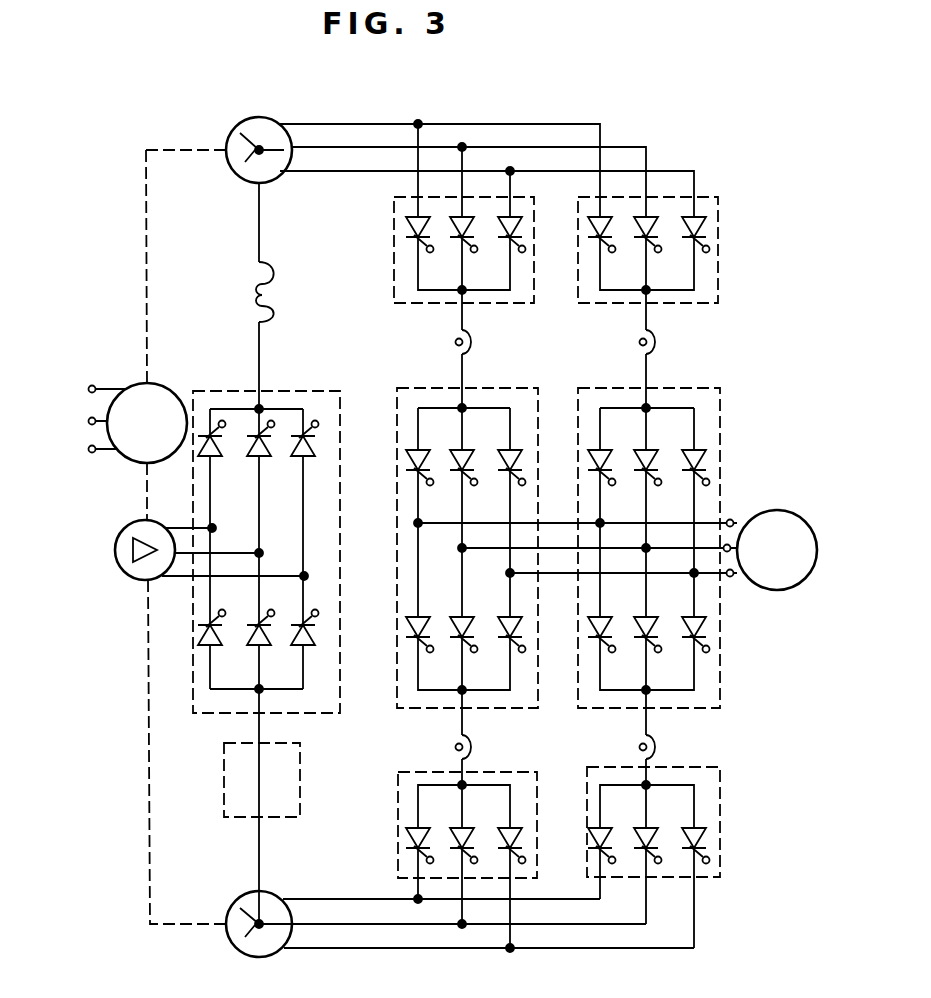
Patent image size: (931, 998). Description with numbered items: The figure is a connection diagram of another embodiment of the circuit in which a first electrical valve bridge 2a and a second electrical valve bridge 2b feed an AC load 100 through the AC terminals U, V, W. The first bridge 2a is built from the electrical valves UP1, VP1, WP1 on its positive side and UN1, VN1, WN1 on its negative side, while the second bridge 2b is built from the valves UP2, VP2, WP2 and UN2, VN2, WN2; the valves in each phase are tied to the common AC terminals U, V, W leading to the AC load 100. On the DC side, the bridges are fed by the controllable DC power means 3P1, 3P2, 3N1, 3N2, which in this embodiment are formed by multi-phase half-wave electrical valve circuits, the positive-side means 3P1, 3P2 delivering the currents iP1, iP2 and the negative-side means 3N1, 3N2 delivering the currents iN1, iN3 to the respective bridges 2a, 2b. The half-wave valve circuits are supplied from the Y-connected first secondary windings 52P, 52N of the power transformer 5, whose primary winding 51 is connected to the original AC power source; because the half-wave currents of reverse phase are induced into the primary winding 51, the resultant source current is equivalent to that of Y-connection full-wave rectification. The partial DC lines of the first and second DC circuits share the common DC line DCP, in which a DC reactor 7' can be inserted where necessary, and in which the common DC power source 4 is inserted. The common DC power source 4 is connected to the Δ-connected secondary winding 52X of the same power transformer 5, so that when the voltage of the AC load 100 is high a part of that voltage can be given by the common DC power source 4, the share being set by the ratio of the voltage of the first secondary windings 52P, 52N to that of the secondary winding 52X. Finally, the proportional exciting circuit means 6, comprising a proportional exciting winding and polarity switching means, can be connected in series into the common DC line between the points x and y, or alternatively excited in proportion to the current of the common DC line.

The first secondary winding 52P is at (258, 117).
The DC reactor 7' is at (278, 292).
The first secondary winding 52N is at (234, 912).
The primary winding 51 is at (129, 385).
The power transformer 5 is at (108, 504).
The secondary winding 52X is at (124, 562).
The common DC power source 4 is at (314, 391).
The common DC line DCP is at (258, 366).
The proportional exciting circuit means 6 is at (224, 792).
The common DC line terminal x is at (266, 835).
The common DC line terminal y is at (266, 737).
The controllable DC power means 3P1 is at (394, 238).
The controllable DC power means 3P2 is at (716, 228).
The controllable DC power means 3N1 is at (499, 772).
The controllable DC power means 3N2 is at (720, 821).
The positive-side current 1 iP1 is at (455, 342).
The positive-side current 2 iP2 is at (640, 342).
The negative-side current 1 iN1 is at (455, 747).
The negative-side current 3 iN3 is at (640, 747).
The first electrical valve bridge 2a is at (470, 531).
The second electrical valve bridge 2b is at (668, 529).
The thyristor UP1 is at (452, 445).
The thyristor VP1 is at (496, 445).
The thyristor WP1 is at (544, 445).
The thyristor UN1 is at (452, 611).
The thyristor VN1 is at (496, 611).
The thyristor WN1 is at (524, 626).
The thyristor UP2 is at (636, 445).
The thyristor VP2 is at (682, 445).
The thyristor WP2 is at (702, 462).
The thyristor UN2 is at (636, 611).
The thyristor VN2 is at (682, 611).
The thyristor WN2 is at (702, 632).
The AC terminal U is at (730, 519).
The AC terminal V is at (724, 551).
The AC terminal W is at (731, 583).
The AC load 100 is at (786, 510).